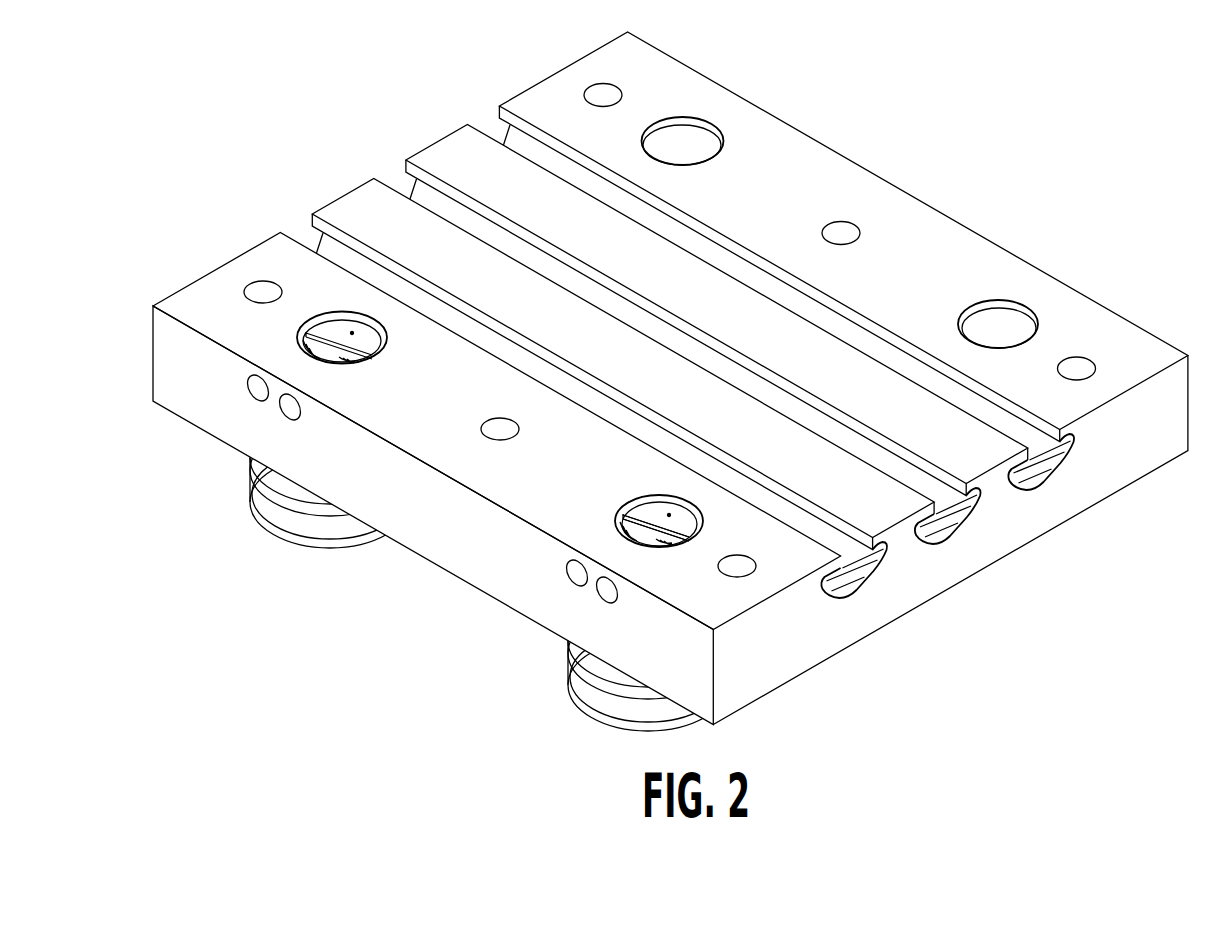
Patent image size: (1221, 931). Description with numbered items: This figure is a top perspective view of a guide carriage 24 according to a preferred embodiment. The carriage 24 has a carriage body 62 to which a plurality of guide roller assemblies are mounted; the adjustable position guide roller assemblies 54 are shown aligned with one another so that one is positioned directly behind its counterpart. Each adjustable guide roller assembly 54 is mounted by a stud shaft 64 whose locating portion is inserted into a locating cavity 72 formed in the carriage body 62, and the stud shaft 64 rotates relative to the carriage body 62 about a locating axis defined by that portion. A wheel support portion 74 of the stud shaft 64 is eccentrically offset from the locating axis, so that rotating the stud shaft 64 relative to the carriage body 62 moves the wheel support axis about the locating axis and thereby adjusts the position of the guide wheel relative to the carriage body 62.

The carriage 24 is at (1032, 194).
The guide roller assembly 54 is at (230, 510).
The carriage body 62 is at (1105, 332).
The stud shaft 64 is at (680, 525).
The locating cavity 72 is at (657, 511).
The wheel support portion 74 is at (632, 503).